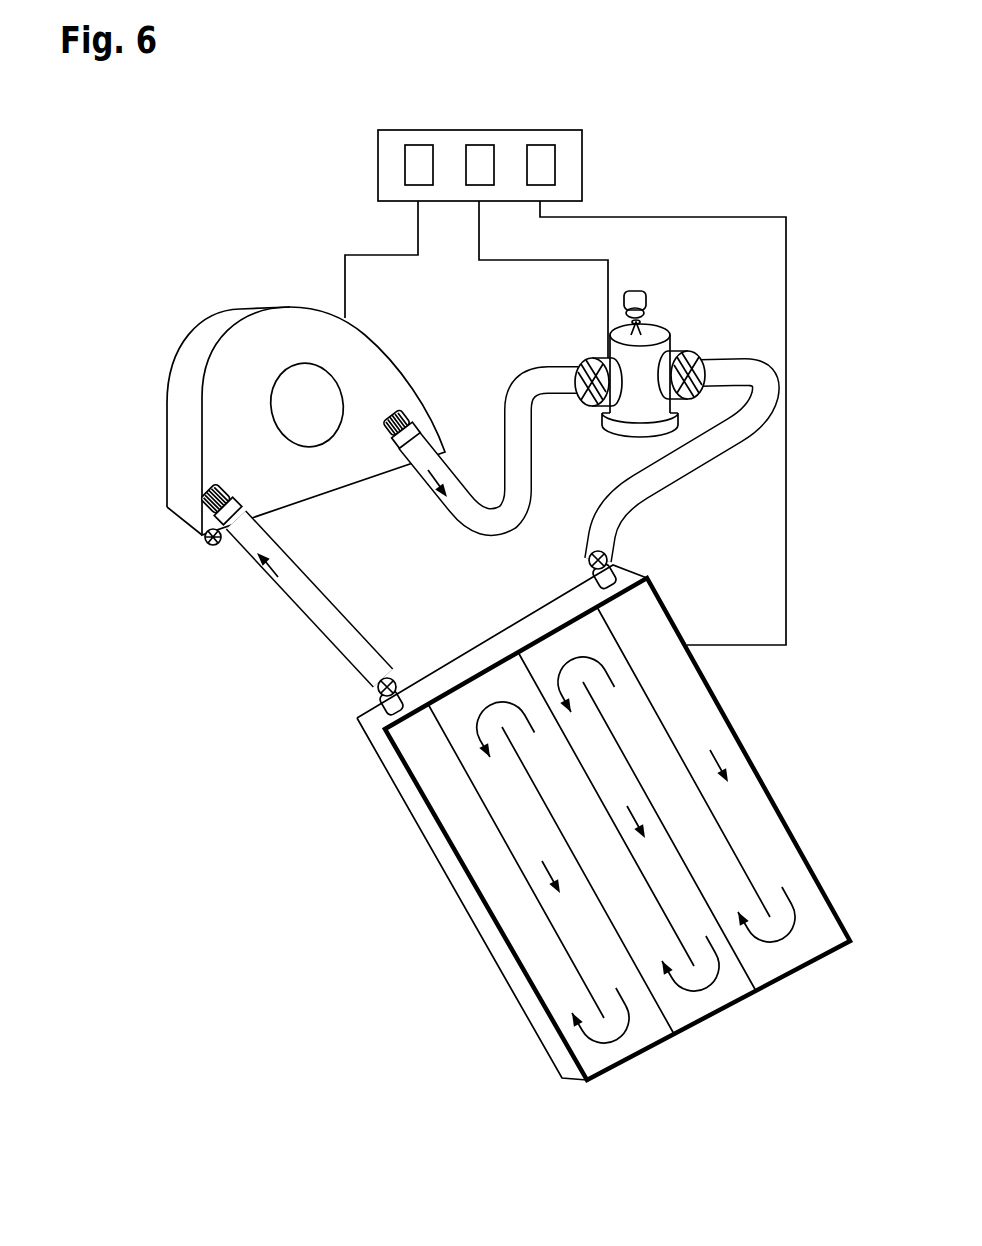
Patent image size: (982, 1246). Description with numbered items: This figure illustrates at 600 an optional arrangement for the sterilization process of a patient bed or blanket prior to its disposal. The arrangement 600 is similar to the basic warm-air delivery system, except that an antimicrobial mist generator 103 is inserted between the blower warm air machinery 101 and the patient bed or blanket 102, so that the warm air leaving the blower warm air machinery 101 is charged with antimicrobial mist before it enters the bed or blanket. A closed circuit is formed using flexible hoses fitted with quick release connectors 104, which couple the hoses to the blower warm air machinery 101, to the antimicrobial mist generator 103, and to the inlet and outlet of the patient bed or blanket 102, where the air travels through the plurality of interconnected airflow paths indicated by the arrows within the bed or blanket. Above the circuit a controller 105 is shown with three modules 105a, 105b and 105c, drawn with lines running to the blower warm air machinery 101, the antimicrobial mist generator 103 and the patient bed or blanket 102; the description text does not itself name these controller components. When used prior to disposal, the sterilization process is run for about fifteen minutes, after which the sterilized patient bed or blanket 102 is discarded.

The optional arrangement for the sterilization process 600 is at (612, 106).
The blower warm air machinery 101 is at (280, 325).
The patient bed or blanket 102 is at (692, 637).
The antimicrobial mist generator 103 is at (665, 320).
The quick release connectors 104 is at (417, 453).
The controller 105 is at (373, 178).
The controller module 105a is at (418, 155).
The controller module 105b is at (479, 155).
The controller module 105c is at (540, 155).